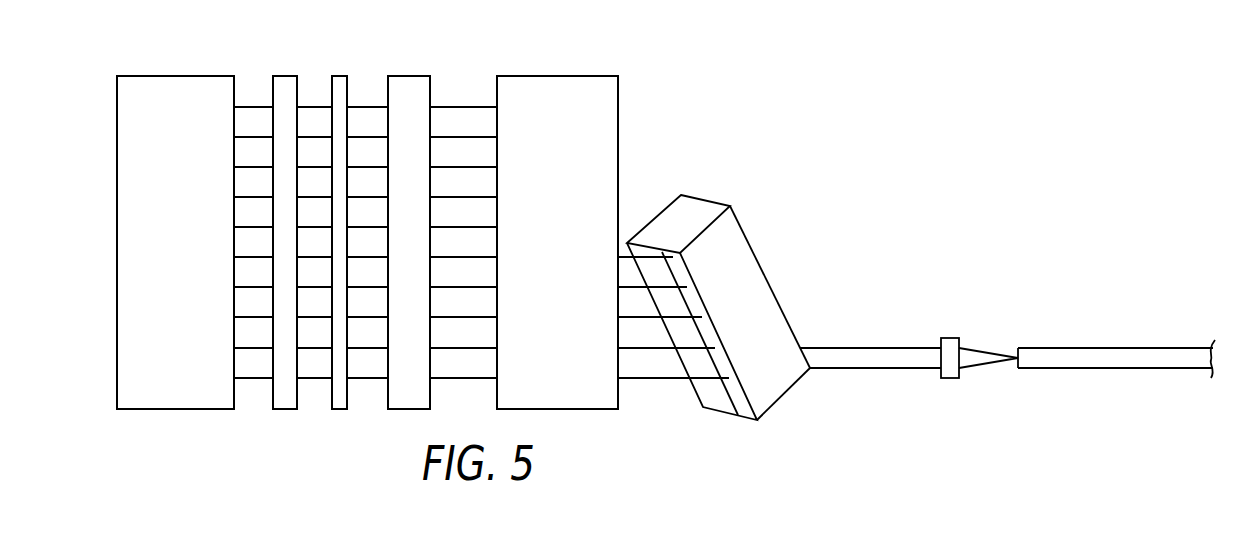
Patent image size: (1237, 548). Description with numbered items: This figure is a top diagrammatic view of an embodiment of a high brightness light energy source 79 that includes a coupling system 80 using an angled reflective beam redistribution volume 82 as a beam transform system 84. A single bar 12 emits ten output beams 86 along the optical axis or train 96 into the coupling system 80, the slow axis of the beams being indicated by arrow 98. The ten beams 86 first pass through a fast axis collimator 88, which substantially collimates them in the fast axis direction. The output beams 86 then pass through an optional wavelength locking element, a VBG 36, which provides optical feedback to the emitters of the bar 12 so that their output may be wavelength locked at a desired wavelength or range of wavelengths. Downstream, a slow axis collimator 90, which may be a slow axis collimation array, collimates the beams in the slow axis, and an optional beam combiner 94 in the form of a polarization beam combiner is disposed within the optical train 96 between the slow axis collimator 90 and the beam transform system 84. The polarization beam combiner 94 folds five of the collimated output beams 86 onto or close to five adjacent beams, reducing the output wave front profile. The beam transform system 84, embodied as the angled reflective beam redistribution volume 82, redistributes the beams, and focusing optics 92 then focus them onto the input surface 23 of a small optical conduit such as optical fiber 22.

The bar 12 is at (186, 189).
The fast axis collimator 88 is at (285, 76).
The VBG 36 is at (340, 76).
The slow axis collimator 90 is at (408, 76).
The beam combiner 94 is at (557, 76).
The optical train 96 is at (463, 107).
The output beams 86 is at (255, 378).
The arrow 98 is at (265, 447).
The high brightness light energy source 79 is at (371, 440).
The coupling system 80 is at (706, 119).
The angled reflective beam redistribution volume 82 is at (740, 220).
The beam transform system 84 is at (778, 300).
The focusing optics 92 is at (951, 338).
The optical fiber 22 is at (1115, 348).
The input surface 23 is at (1018, 368).